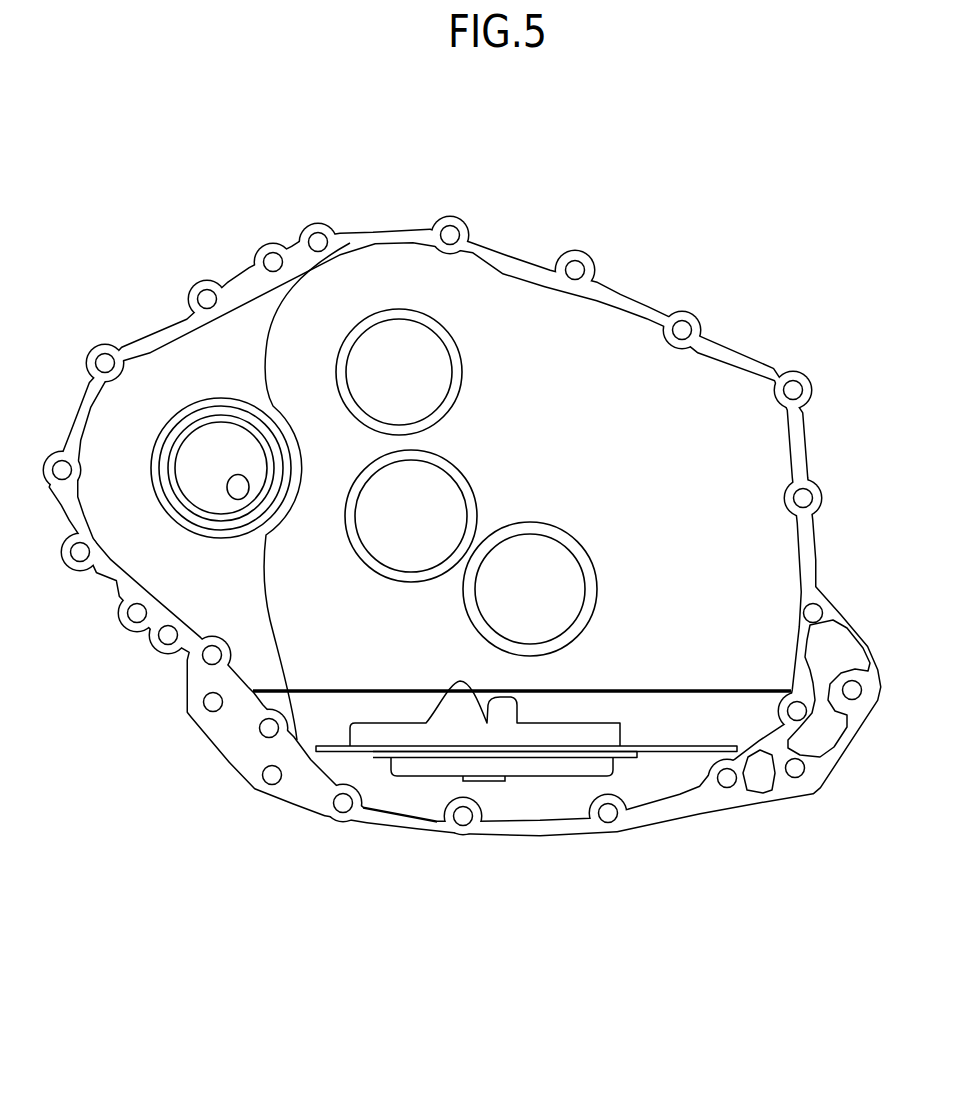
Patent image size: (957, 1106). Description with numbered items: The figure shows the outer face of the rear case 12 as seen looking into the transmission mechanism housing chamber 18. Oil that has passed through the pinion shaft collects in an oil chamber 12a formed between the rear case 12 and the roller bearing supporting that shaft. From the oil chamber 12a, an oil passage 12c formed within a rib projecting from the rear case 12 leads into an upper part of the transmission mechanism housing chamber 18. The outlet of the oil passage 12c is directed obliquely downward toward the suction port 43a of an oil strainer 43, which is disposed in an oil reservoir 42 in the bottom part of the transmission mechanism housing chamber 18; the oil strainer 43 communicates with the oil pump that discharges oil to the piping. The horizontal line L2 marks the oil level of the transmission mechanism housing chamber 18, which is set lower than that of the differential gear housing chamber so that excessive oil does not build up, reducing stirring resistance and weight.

The rear case 12 is at (527, 243).
The oil chamber 12a is at (234, 470).
The oil passage 12c is at (376, 628).
The transmission mechanism housing chamber 18 is at (438, 632).
The oil reservoir 42 is at (421, 807).
The oil strainer 43 is at (566, 703).
The suction port 43a is at (489, 781).
The oil level L2 is at (668, 690).